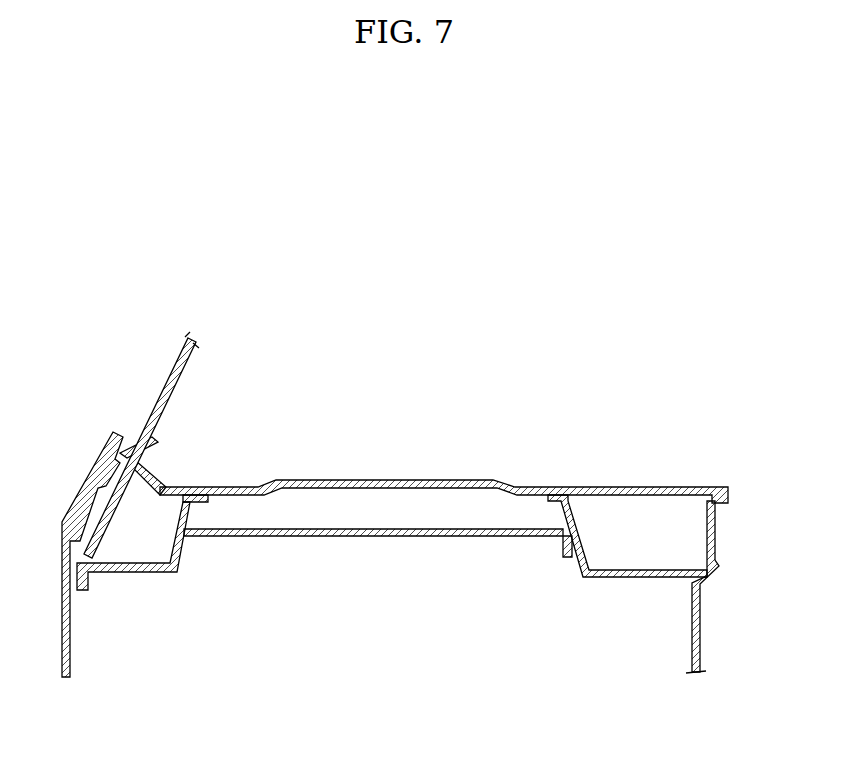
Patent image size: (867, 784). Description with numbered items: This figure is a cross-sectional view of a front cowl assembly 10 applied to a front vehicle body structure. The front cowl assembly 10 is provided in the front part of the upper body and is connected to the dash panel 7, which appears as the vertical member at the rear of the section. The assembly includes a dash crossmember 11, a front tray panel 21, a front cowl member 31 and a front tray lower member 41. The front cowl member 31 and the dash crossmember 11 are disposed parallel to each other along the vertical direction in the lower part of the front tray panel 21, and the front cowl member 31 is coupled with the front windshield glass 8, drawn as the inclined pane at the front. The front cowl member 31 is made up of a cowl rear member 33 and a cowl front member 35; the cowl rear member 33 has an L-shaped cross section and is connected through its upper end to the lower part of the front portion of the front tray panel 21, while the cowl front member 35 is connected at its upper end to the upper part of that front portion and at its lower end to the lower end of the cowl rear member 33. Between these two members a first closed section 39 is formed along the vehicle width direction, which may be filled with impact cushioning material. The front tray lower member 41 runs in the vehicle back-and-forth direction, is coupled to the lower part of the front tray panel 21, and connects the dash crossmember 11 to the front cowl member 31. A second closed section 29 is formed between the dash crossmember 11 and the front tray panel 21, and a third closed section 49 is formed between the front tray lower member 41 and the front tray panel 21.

The dash panel 7 is at (701, 628).
The front windshield glass 8 is at (160, 380).
The front cowl assembly 10 is at (397, 301).
The dash crossmember 11 is at (603, 578).
The front tray panel 21 is at (430, 482).
The second closed section 29 is at (665, 531).
The front cowl member 31 is at (163, 639).
The cowl rear member 33 is at (149, 578).
The cowl front member 35 is at (103, 526).
The first closed section 39 is at (146, 523).
The front tray lower member 41 is at (387, 539).
The third closed section 49 is at (320, 508).